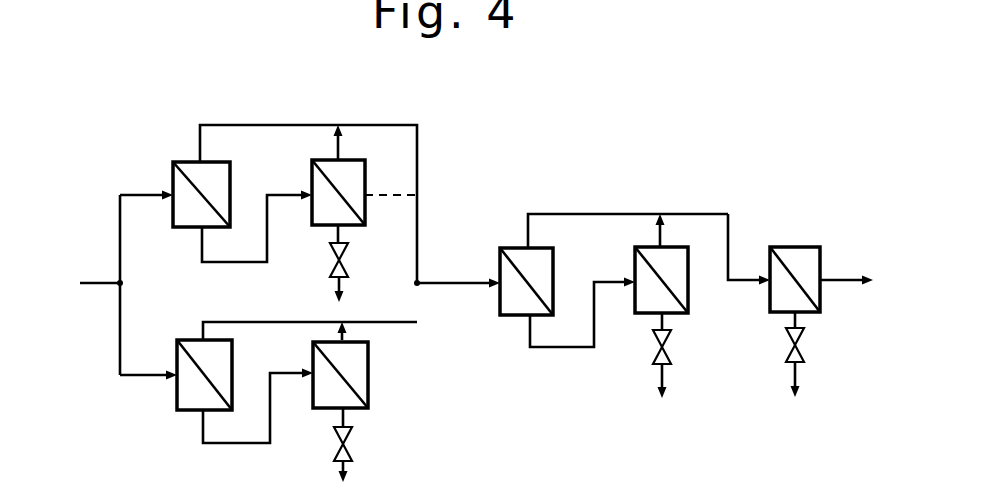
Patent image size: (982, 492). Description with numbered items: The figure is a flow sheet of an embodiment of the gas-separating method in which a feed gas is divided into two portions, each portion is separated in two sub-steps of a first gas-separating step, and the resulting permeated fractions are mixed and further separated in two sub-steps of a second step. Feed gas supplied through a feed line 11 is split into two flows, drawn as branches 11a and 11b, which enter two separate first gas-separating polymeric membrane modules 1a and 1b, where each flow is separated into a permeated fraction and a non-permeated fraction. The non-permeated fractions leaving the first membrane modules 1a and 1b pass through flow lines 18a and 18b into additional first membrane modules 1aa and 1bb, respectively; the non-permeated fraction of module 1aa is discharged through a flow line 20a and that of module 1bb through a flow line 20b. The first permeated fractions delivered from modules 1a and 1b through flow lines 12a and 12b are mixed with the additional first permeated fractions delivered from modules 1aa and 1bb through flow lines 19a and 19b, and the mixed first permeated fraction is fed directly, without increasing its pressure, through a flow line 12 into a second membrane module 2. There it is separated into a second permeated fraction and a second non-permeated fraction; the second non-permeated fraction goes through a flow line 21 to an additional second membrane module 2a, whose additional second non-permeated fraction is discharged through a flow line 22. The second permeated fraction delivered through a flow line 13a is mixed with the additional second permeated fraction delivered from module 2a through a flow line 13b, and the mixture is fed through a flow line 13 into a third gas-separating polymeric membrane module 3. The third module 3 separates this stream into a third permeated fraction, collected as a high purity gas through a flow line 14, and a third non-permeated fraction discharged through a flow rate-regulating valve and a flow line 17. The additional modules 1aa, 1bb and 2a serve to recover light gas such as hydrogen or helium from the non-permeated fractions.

The feed line 11 is at (90, 278).
The first feed branch line 11a is at (116, 208).
The second feed branch line 11b is at (120, 347).
The first gas-separating polymeric membrane module 1a is at (175, 163).
The additional first membrane module 1aa is at (312, 168).
The first gas-separating polymeric membrane module 1b is at (176, 406).
The additional first membrane module 1bb is at (368, 389).
The flow line 12a is at (250, 125).
The flow line 12b is at (278, 322).
The flow line 12 is at (450, 282).
The flow line 18a is at (216, 262).
The flow line 18b is at (243, 445).
The flow line 19a is at (343, 146).
The flow line 19b is at (347, 334).
The flow line 20a is at (345, 290).
The flow line 20b is at (349, 468).
The second membrane module 2 is at (501, 251).
The additional second membrane module 2a is at (686, 300).
The flow line 13a is at (561, 214).
The flow line 13b is at (662, 230).
The flow line 13 is at (718, 214).
The flow line 21 is at (556, 352).
The flow line 22 is at (664, 380).
The third gas-separating polymeric membrane module 3 is at (791, 247).
The flow line 14 is at (849, 279).
The flow line 17 is at (796, 380).